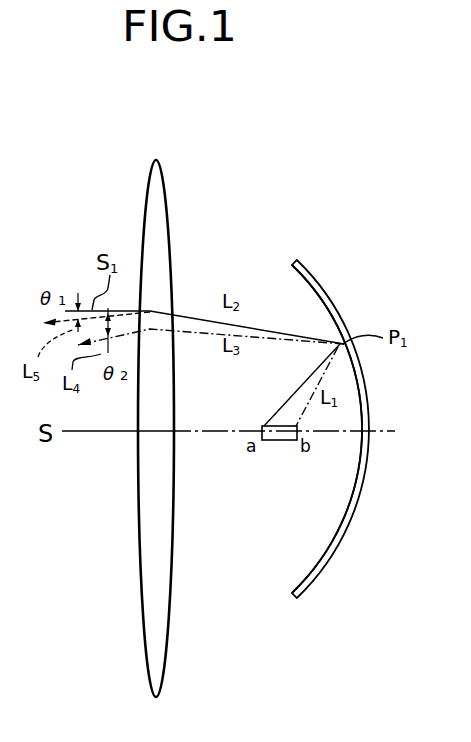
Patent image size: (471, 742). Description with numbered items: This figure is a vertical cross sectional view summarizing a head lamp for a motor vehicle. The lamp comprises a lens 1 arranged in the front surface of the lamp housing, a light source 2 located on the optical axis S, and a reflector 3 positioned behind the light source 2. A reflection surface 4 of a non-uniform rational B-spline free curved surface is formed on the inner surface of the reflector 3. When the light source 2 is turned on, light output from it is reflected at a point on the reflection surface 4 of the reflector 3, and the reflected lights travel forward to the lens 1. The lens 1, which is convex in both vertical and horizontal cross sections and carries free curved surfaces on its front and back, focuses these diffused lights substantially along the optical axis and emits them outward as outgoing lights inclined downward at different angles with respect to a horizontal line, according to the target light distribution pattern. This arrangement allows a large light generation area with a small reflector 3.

The lens 1 is at (147, 204).
The light source 2 is at (264, 425).
The reflector 3 is at (328, 295).
The reflection surface 4 is at (349, 490).